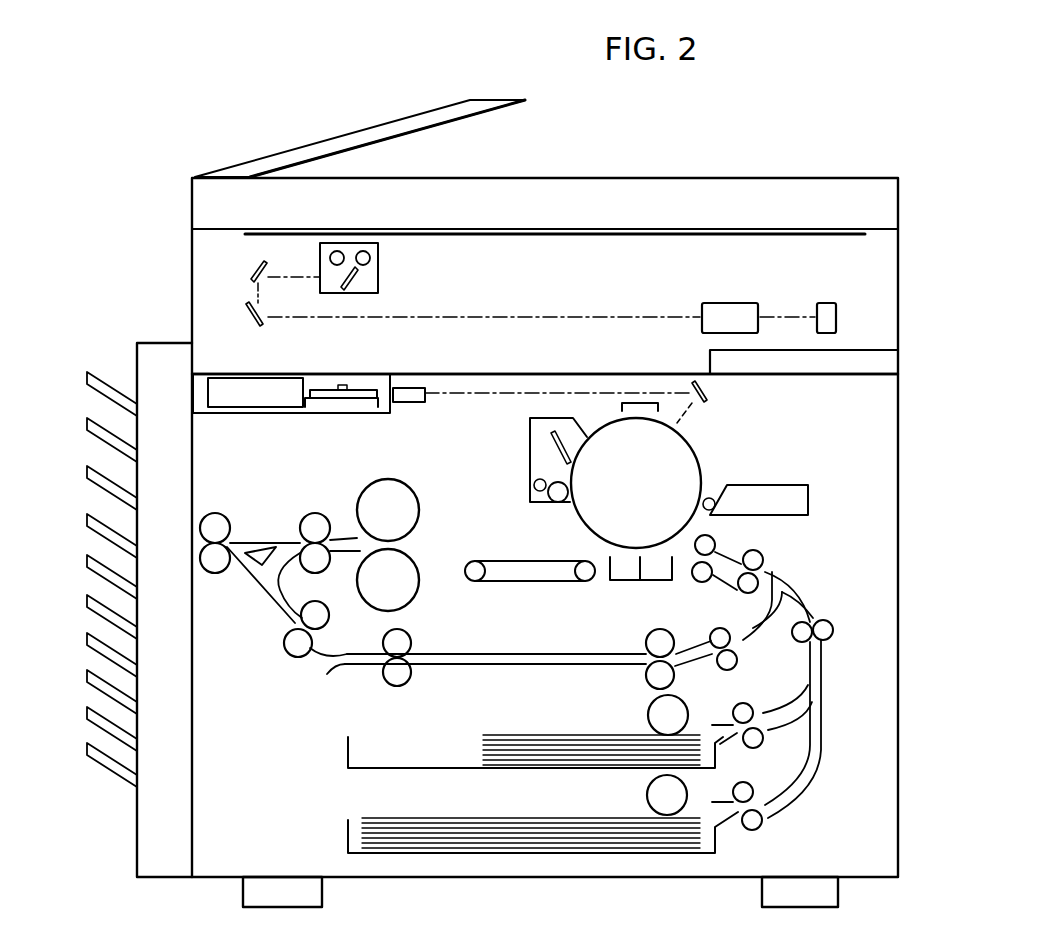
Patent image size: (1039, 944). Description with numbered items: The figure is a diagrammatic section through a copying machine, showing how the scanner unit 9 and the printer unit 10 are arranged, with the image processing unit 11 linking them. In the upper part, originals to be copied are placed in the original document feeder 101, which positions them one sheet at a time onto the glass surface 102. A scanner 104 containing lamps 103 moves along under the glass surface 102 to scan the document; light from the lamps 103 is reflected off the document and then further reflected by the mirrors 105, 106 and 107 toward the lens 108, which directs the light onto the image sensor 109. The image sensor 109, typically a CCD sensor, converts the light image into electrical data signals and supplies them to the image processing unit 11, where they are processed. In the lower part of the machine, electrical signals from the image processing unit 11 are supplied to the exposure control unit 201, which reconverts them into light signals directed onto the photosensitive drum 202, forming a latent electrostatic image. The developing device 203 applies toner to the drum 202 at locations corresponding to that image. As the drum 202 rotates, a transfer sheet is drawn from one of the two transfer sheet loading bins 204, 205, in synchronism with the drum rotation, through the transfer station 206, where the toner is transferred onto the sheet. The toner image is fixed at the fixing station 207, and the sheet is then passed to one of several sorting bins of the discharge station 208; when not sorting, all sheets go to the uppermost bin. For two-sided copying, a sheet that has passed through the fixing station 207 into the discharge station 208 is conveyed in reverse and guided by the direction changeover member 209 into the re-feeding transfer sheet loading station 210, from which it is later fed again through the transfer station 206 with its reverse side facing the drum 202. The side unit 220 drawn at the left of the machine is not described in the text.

The scanner unit 9 is at (915, 264).
The printer unit 10 is at (911, 454).
The image processing unit 11 is at (898, 360).
The original document feeder 101 is at (270, 153).
The glass surface 102 is at (830, 234).
The lamps 103 is at (362, 249).
The scanner 104 is at (380, 264).
The mirror 105 is at (378, 281).
The mirror 106 is at (250, 275).
The mirror 107 is at (248, 315).
The lens 108 is at (718, 303).
The image sensor 109 is at (836, 311).
The exposure control unit 201 is at (326, 386).
The photosensitive drum 202 is at (697, 445).
The developing device 203 is at (808, 498).
The transfer sheet loading bin 204 is at (717, 763).
The transfer sheet loading bin 205 is at (707, 838).
The transfer station 206 is at (653, 572).
The fixing station 207 is at (425, 556).
The discharge station 208 is at (200, 564).
The direction changeover member 209 is at (262, 563).
The re-feeding transfer sheet loading station 210 is at (523, 666).
The sorter unit 220 is at (147, 360).